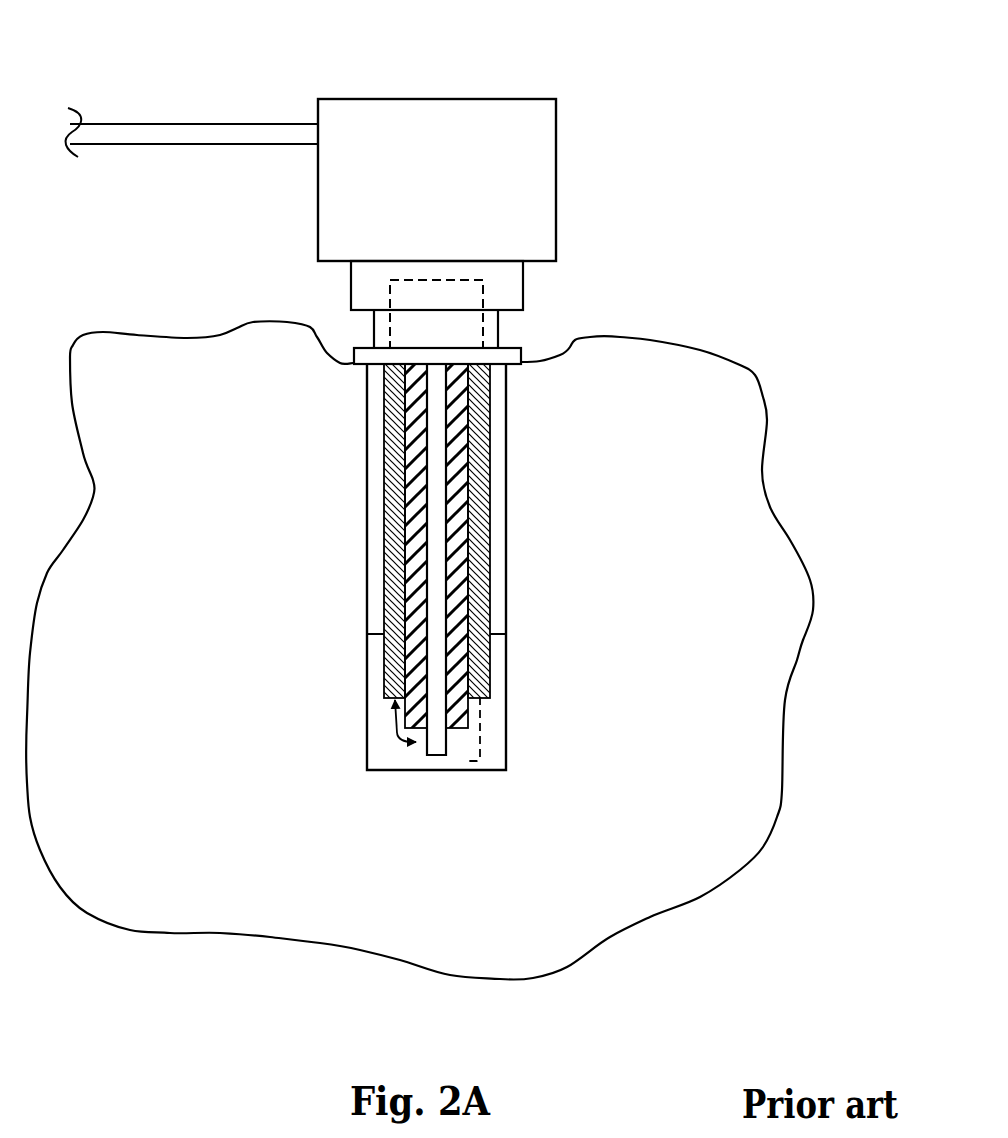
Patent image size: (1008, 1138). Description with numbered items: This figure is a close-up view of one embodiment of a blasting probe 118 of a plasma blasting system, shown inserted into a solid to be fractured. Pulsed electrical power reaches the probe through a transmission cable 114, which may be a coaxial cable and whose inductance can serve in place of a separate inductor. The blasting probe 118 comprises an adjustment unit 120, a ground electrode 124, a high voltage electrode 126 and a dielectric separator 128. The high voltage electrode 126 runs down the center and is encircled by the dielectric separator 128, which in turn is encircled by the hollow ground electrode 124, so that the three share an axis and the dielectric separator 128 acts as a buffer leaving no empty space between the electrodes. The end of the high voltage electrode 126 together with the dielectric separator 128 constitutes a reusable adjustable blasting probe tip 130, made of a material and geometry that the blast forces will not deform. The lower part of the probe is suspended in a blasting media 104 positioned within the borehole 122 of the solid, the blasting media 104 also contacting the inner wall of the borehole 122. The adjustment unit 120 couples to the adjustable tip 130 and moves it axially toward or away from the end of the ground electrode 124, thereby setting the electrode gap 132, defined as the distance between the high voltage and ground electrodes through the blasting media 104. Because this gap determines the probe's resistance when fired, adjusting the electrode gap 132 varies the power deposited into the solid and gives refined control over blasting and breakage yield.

The blasting media 104 is at (492, 757).
The transmission cable 114 is at (165, 123).
The blasting probe 118 is at (302, 98).
The adjustment unit 120 is at (400, 320).
The borehole 122 is at (365, 498).
The ground electrode 124 is at (483, 460).
The high voltage electrode 126 is at (435, 630).
The dielectric separator 128 is at (458, 600).
The adjustable blasting probe tip 130 is at (480, 730).
The electrode gap 132 is at (397, 733).